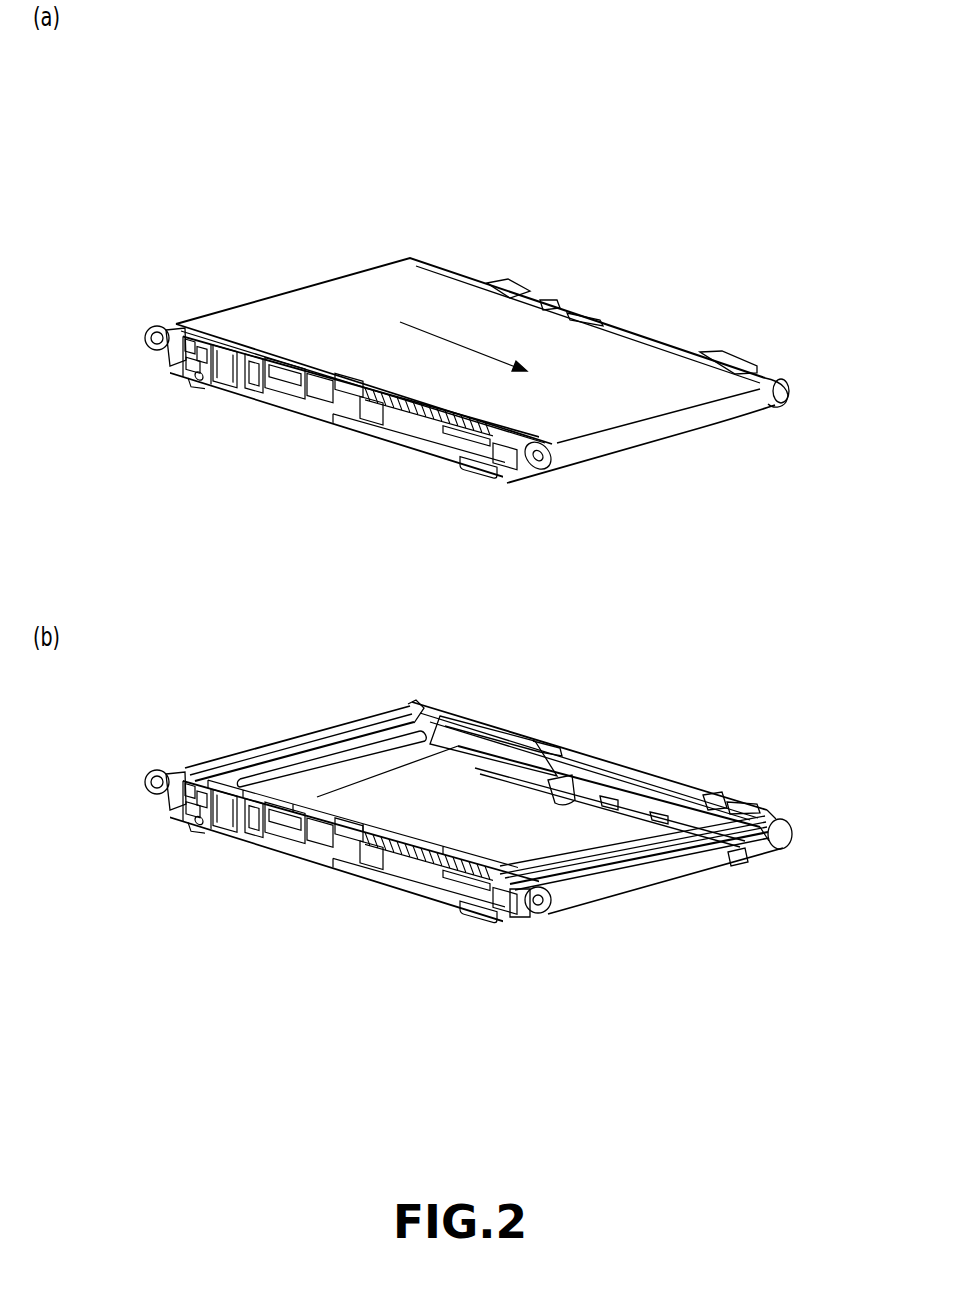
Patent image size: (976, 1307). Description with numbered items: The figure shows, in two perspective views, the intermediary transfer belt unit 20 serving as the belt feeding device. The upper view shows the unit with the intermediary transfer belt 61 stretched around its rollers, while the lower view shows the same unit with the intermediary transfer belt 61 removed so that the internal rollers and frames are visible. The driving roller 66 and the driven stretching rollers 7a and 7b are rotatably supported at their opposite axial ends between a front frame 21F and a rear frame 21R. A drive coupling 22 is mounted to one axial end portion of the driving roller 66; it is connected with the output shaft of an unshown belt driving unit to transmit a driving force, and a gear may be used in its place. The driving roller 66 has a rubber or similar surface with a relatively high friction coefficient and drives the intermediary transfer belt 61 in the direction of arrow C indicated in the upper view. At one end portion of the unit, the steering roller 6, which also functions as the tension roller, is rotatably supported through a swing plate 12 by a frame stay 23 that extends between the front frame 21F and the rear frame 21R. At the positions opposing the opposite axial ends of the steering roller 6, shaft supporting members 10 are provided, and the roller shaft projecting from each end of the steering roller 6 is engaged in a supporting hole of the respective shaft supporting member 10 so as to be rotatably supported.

The intermediary transfer belt unit 20 is at (637, 253).
The intermediary transfer belt 61 is at (325, 307).
The front frame 21F is at (505, 282).
The rear frame 21R is at (385, 417).
The drive coupling 22 is at (143, 340).
The driving roller 66 is at (278, 747).
The driven stretching roller 7b is at (363, 765).
The swing plate 12 is at (526, 864).
The frame stay 23 is at (576, 858).
The steering roller 6 is at (597, 883).
The driven stretching roller 7a is at (663, 883).
The shaft supporting member 10 is at (780, 850).
The arrow C is at (463, 337).